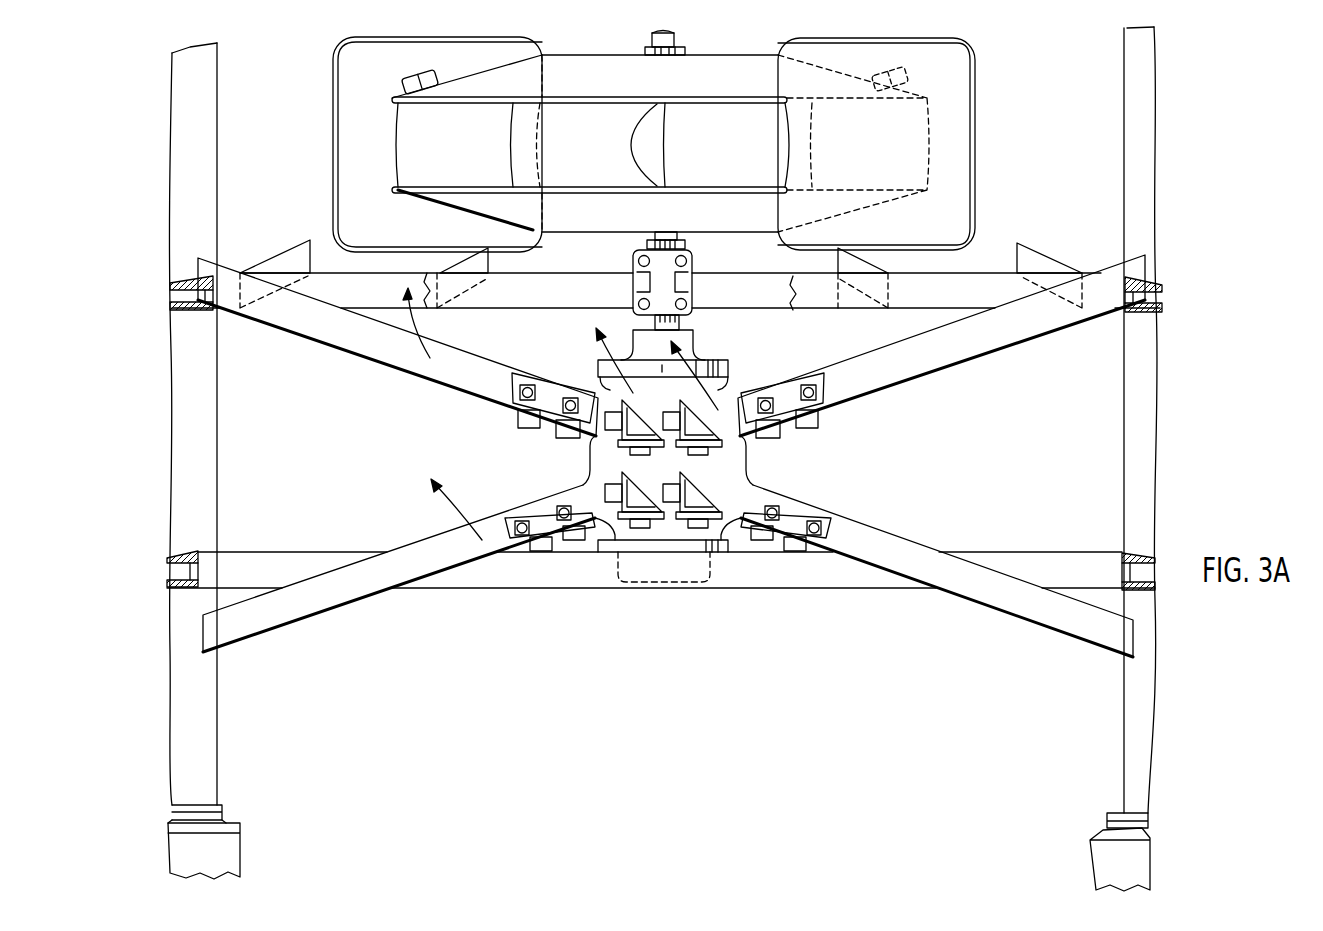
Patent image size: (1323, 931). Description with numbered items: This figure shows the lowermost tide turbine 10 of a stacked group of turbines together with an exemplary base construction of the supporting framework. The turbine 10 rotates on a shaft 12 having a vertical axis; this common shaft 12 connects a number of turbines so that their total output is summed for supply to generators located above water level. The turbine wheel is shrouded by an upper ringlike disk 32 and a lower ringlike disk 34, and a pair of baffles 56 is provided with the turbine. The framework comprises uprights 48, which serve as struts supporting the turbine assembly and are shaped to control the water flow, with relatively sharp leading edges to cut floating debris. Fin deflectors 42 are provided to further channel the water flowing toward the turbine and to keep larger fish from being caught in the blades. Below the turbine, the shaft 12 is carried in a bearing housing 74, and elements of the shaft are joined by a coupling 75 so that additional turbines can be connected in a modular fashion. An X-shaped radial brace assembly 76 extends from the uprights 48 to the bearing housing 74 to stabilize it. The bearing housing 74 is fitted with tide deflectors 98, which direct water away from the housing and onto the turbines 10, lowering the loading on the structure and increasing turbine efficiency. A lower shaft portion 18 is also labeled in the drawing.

The tide turbine 10 is at (657, 144).
The shaft 12 is at (673, 38).
The shaft 18 is at (637, 235).
The upper ringlike disk 32 is at (585, 70).
The lower ringlike disk 34 is at (492, 208).
The fin deflector 42 is at (288, 258).
The upright 48 is at (200, 410).
The baffle 56 is at (335, 182).
The bearing housing 74 is at (615, 533).
The coupling 75 is at (693, 291).
The X-shaped radial brace assembly 76 is at (417, 360).
The tide deflector 98 is at (692, 530).